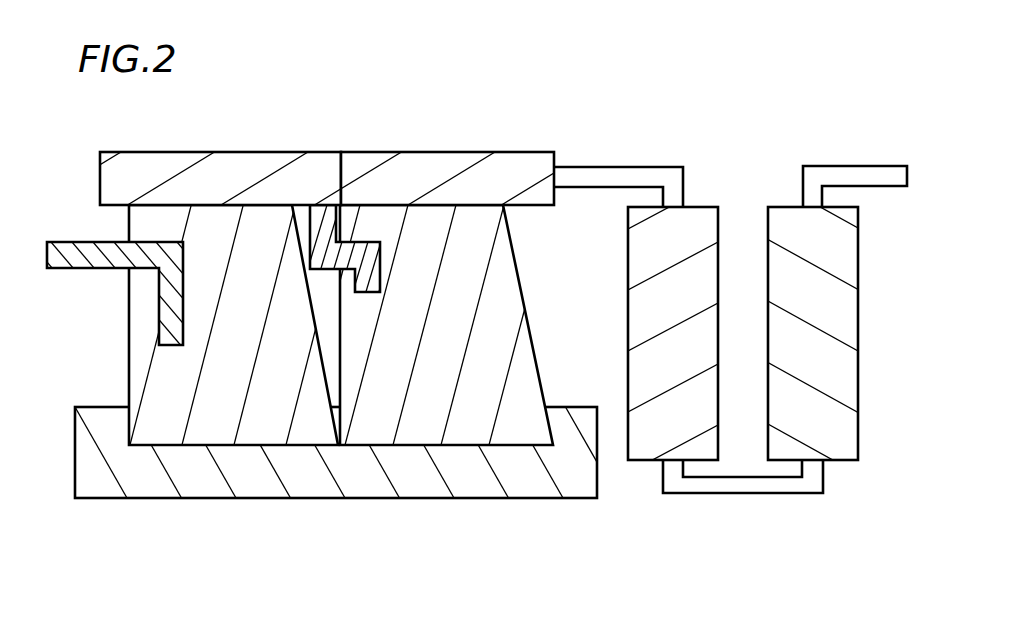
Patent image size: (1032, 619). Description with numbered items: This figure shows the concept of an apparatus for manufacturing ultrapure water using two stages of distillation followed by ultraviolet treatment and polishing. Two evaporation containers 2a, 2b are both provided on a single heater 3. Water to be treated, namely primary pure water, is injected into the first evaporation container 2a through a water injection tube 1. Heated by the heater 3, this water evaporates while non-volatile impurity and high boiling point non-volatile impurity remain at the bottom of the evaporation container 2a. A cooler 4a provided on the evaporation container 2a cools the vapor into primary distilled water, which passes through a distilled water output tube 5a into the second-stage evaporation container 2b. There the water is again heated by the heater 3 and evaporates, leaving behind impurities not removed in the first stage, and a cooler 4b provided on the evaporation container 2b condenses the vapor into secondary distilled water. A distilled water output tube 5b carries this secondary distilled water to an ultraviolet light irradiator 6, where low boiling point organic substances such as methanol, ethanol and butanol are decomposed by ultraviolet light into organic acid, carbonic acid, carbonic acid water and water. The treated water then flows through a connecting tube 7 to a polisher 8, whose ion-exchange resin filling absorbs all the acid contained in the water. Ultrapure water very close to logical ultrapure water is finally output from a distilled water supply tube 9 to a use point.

The water injection tube 1 is at (88, 270).
The evaporation container 2a is at (129, 353).
The evaporation container 2b is at (508, 323).
The heater 3 is at (213, 500).
The cooler 4a is at (262, 152).
The cooler 4b is at (472, 152).
The distilled water output tube 5a is at (360, 242).
The distilled water output tube 5b is at (593, 167).
The ultraviolet light irradiator 6 is at (703, 207).
The connecting tube 7 is at (740, 497).
The polisher 8 is at (858, 318).
The distilled water supply tube 9 is at (855, 166).